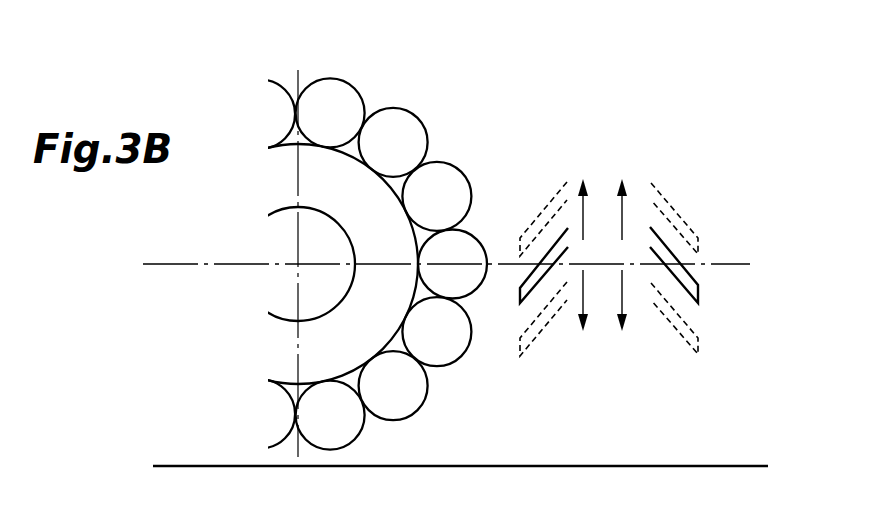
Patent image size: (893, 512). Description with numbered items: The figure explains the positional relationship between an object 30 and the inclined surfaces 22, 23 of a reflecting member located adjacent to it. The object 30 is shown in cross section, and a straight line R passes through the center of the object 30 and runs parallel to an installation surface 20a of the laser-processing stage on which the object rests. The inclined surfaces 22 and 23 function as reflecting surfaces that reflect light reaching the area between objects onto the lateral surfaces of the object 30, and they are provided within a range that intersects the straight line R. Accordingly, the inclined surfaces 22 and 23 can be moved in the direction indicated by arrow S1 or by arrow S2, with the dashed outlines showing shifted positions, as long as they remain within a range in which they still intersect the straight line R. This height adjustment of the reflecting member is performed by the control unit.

The object 30 is at (433, 111).
The inclined surface 22 is at (519, 292).
The inclined surface 23 is at (698, 290).
The installation surface 20a is at (692, 465).
The arrow S1 is at (620, 207).
The arrow S2 is at (620, 314).
The straight line R is at (458, 263).